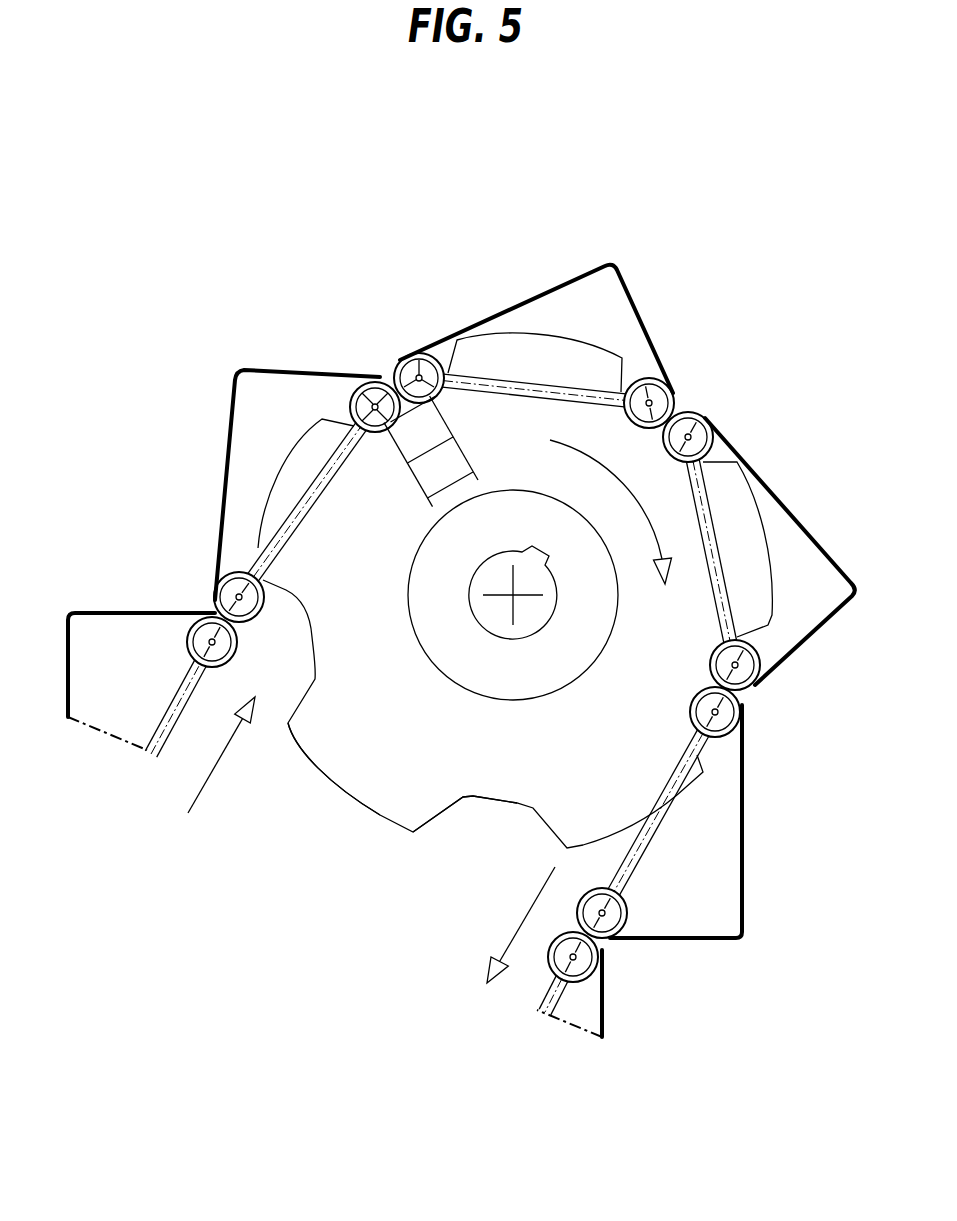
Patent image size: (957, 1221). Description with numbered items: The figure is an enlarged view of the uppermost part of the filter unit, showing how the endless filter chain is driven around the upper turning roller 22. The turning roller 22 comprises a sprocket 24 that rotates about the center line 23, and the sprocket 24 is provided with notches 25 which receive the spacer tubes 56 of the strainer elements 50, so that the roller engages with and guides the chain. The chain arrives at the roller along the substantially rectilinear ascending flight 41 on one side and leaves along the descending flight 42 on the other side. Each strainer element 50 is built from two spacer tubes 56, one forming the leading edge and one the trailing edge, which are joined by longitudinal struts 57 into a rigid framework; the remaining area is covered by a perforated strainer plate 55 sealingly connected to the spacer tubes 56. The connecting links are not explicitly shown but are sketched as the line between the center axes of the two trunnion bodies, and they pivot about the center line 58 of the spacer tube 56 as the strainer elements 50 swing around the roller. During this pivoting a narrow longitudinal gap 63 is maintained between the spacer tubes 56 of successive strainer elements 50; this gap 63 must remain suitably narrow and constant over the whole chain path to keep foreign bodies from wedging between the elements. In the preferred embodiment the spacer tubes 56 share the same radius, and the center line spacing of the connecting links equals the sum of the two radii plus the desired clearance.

The upper turning roller 22 is at (371, 831).
The center line 23 is at (513, 595).
The sprocket 24 is at (390, 768).
The notches 25 is at (474, 812).
The ascending flight 41 is at (211, 773).
The descending flight 42 is at (534, 903).
The strainer element 50 is at (168, 466).
The strainer plate 55 is at (232, 385).
The spacer tube 56 is at (432, 395).
The longitudinal struts 57 is at (314, 505).
The center line of the spacer tube 58 is at (372, 404).
The longitudinal gap 63 is at (430, 450).